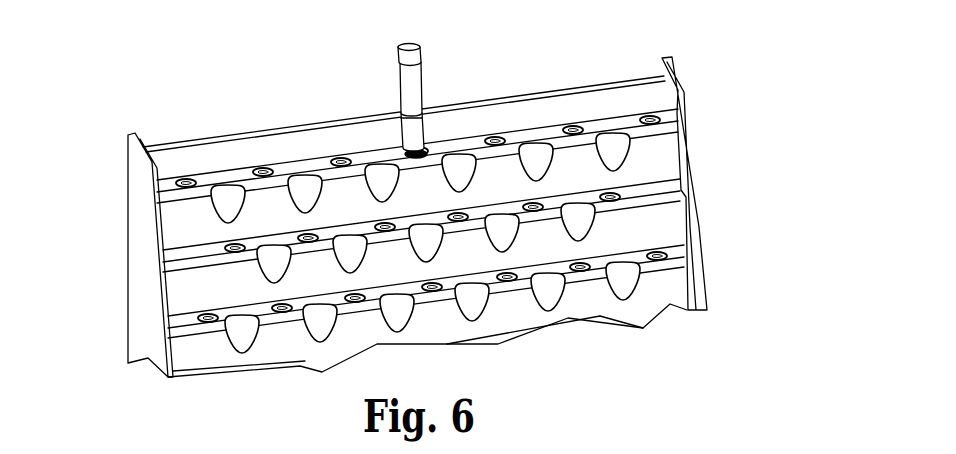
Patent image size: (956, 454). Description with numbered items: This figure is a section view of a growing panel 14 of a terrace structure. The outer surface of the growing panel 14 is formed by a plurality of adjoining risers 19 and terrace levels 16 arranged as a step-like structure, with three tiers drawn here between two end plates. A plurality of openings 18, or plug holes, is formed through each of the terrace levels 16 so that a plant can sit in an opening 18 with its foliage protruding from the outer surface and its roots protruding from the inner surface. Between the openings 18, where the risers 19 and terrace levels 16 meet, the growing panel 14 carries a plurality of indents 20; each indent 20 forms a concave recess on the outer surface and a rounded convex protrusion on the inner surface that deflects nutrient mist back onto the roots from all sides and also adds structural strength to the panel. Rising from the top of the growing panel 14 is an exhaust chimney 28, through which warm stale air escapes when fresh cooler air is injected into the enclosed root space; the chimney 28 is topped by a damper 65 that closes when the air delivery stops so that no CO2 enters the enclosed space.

The growing panel 14 is at (112, 249).
The terrace levels 16 is at (537, 133).
The openings 18 is at (655, 115).
The risers 19 is at (163, 226).
The indents 20 is at (302, 187).
The exhaust chimney 28 is at (415, 75).
The damper 65 is at (400, 45).